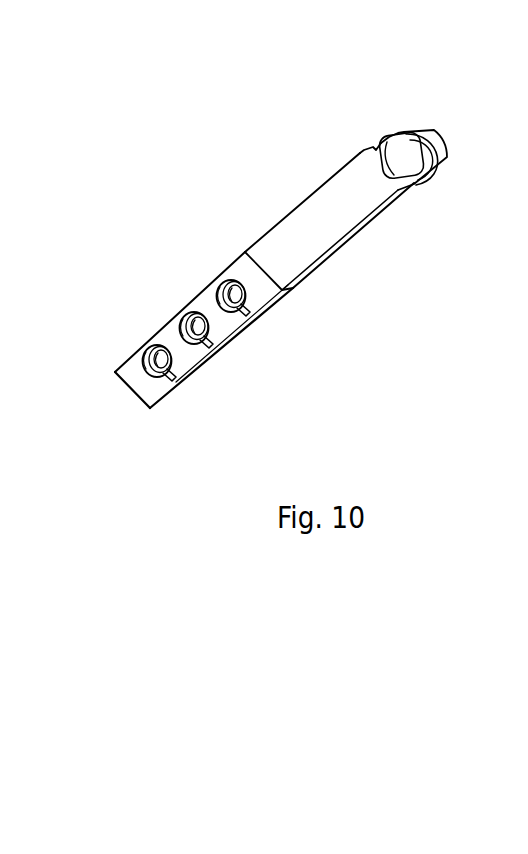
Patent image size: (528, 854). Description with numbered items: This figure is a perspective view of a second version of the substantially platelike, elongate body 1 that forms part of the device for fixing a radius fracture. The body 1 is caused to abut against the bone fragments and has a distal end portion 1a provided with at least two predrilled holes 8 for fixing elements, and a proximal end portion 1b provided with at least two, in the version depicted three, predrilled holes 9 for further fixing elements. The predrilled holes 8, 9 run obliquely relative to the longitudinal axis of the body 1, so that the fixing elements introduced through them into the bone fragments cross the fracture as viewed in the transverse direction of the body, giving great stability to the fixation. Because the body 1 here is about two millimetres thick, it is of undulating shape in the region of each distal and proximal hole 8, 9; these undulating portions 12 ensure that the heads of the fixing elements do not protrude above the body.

The body 1 is at (277, 210).
The distal end portion 1a is at (399, 165).
The proximal end portion 1b is at (150, 410).
The predrilled holes 8 is at (405, 133).
The predrilled holes 9 is at (246, 315).
The undulating portions 12 is at (221, 283).